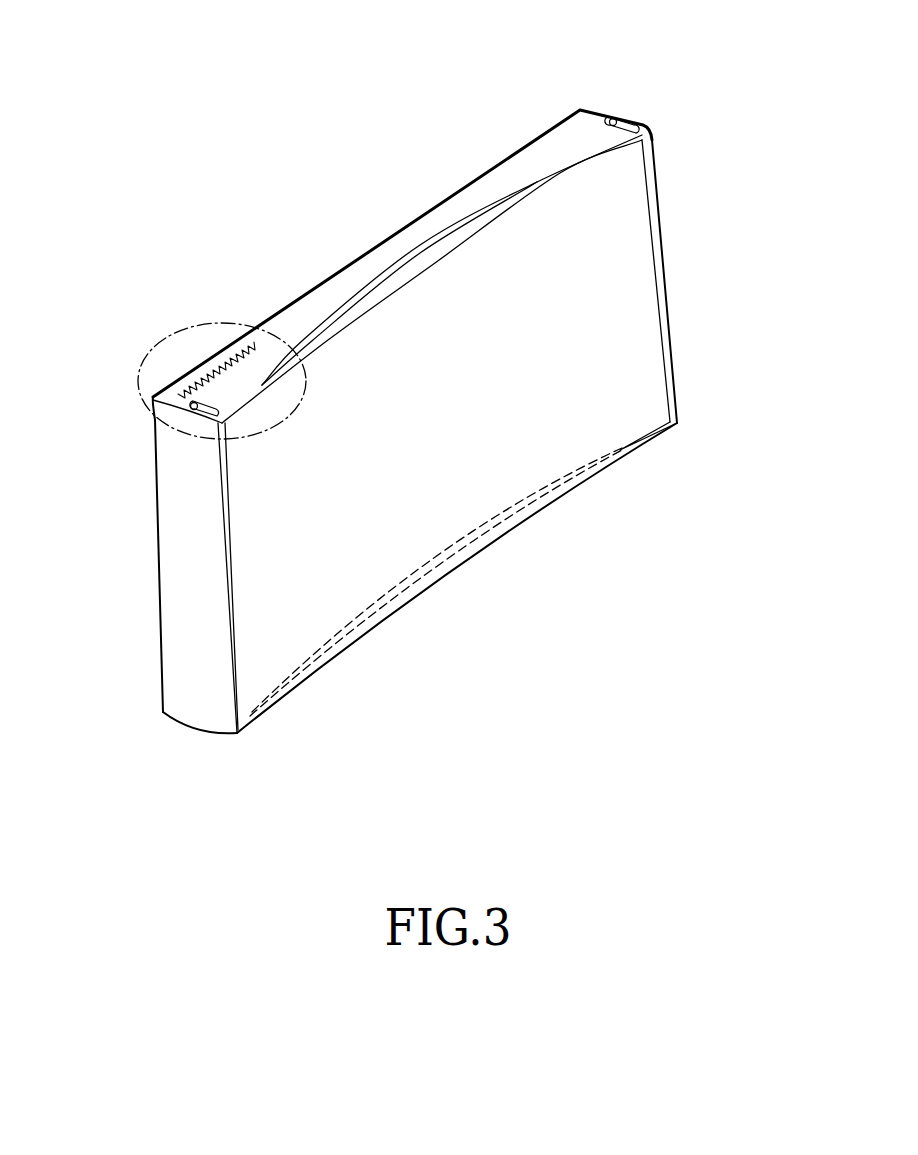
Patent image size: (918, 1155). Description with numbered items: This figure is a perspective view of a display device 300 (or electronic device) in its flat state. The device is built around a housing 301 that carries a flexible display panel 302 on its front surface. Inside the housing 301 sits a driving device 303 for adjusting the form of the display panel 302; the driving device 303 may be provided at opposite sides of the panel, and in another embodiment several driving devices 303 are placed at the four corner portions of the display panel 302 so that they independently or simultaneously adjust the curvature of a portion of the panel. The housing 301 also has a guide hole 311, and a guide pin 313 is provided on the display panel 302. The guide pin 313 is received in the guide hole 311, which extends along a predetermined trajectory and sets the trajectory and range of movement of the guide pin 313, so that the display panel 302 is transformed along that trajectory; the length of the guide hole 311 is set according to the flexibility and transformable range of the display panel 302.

The display device 300 is at (395, 380).
The housing 301 is at (182, 567).
The flexible display panel 302 is at (442, 513).
The driving device 303 is at (185, 331).
The guide hole 311 is at (207, 415).
The guide pin 313 is at (195, 407).